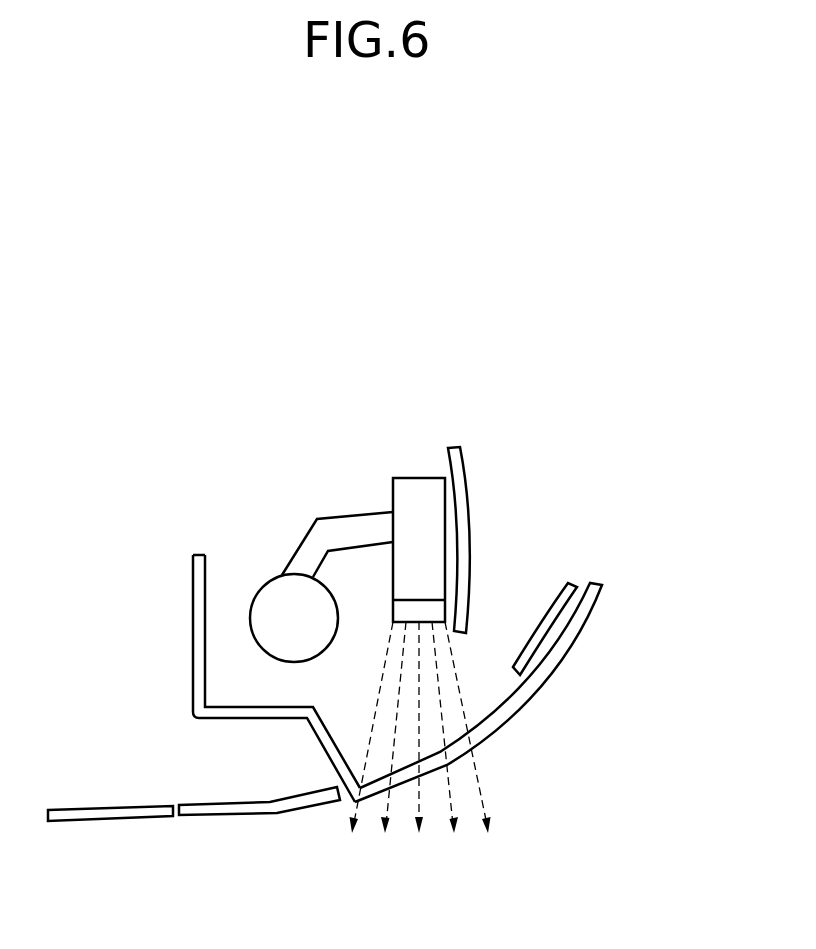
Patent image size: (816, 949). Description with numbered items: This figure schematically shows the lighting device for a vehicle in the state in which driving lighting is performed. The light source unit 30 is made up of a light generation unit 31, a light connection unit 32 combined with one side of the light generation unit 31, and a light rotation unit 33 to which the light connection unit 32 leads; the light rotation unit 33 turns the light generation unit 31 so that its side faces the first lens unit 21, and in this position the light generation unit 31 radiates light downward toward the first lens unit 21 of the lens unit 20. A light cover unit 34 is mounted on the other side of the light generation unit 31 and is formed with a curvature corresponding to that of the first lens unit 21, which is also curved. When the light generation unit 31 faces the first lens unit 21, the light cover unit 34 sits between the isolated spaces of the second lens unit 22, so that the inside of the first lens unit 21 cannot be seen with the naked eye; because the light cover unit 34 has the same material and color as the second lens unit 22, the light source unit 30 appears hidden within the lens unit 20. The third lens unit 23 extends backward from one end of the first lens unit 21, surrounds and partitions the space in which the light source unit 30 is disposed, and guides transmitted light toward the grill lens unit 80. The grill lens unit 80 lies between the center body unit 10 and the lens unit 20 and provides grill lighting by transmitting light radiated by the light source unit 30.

The center body unit 10 is at (107, 820).
The grill lens unit 80 is at (238, 815).
The lens unit 20 is at (677, 588).
The first lens unit 21 is at (505, 722).
The second lens unit 22 is at (557, 617).
The third lens unit 23 is at (330, 743).
The light source unit 30 is at (437, 342).
The light generation unit 31 is at (417, 490).
The light connection unit 32 is at (337, 527).
The light rotation unit 33 is at (268, 600).
The light cover unit 34 is at (456, 447).